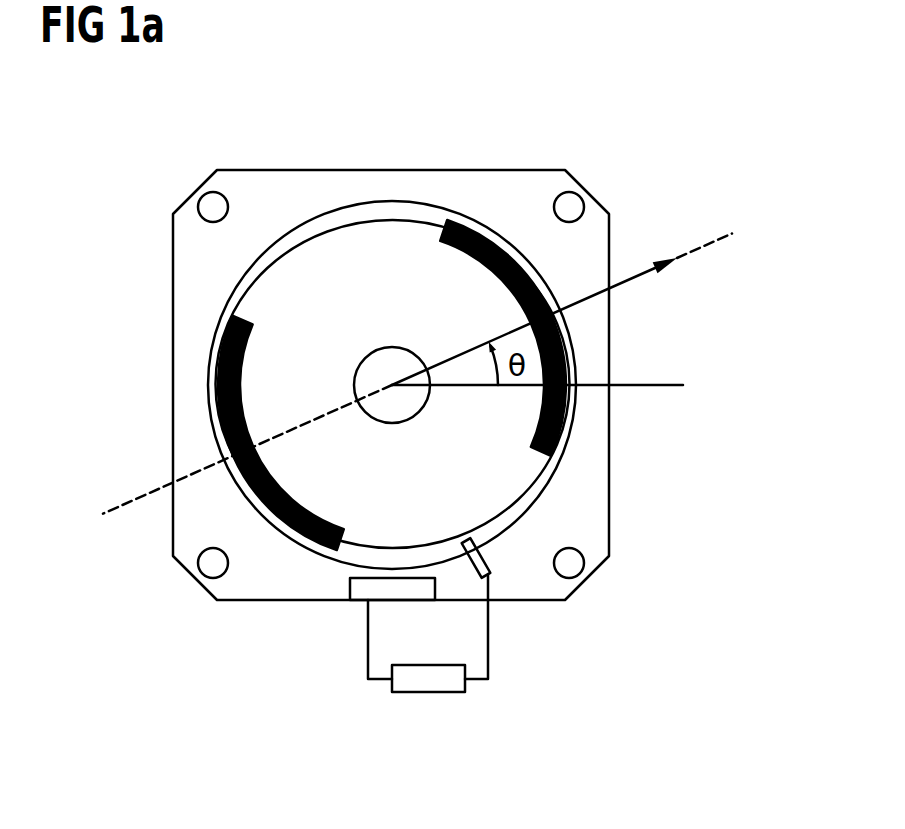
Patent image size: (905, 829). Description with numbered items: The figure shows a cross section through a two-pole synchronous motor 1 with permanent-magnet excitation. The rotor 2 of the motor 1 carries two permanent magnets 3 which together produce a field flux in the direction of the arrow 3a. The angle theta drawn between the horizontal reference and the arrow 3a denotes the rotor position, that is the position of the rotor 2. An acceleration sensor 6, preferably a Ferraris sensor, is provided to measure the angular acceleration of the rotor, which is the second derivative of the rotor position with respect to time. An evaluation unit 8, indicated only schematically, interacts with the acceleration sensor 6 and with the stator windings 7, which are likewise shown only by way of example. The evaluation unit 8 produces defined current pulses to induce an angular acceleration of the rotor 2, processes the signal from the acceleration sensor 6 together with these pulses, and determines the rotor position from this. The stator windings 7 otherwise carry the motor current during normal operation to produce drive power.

The synchronous motor 1 is at (282, 116).
The rotor 2 is at (375, 220).
The permanent magnets 3 is at (472, 230).
The arrow 3a is at (642, 269).
The acceleration sensor 6 is at (490, 558).
The stator windings 7 is at (350, 586).
The evaluation unit 8 is at (428, 692).